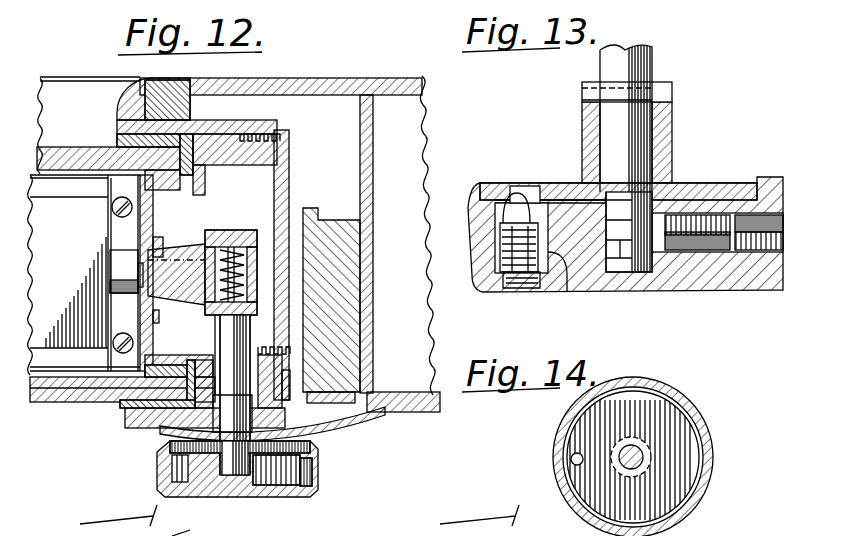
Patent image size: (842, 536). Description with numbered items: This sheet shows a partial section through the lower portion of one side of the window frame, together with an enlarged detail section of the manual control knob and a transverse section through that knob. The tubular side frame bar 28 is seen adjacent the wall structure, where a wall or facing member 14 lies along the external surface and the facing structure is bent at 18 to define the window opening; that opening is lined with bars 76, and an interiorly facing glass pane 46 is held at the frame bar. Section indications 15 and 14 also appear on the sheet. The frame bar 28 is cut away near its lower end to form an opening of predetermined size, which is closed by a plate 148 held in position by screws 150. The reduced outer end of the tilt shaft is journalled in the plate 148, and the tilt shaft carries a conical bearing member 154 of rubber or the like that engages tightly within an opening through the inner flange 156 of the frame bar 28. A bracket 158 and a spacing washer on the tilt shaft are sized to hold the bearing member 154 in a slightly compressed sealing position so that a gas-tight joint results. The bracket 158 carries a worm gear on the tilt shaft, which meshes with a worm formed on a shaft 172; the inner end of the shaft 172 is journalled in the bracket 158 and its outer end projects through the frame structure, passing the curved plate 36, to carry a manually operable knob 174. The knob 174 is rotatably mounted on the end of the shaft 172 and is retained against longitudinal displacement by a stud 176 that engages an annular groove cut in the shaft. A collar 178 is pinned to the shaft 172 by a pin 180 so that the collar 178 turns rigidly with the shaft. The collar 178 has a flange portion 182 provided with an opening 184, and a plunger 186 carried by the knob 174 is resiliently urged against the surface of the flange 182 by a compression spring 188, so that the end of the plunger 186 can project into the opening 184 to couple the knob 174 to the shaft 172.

In FIG. 12, the wall or facing member 14 is at (392, 77).
In FIG. 12, the section line / cutting plane 15 is at (57, 253).
In FIG. 12, the bent portion of facing structure 18 is at (373, 140).
In FIG. 12, the side frame bar 28 is at (118, 195).
In FIG. 12, the curved cover plate 36 is at (372, 430).
In FIG. 12, the interiorly facing glass pane 46 is at (64, 400).
In FIG. 12, the bar 76 is at (375, 234).
In FIG. 12, the plate 148 is at (287, 182).
In FIG. 12, the screw 150 is at (287, 141).
In FIG. 12, the conical bearing member 154 is at (173, 306).
In FIG. 12, the inner flange 156 is at (163, 220).
In FIG. 12, the bracket 158 is at (223, 230).
In FIG. 12, the shaft 172 is at (240, 330).
In FIG. 13, the shaft 172 is at (650, 58).
In FIG. 14, the shaft 172 is at (640, 463).
In FIG. 12, the manually operable knob 174 is at (278, 500).
In FIG. 13, the manually operable knob 174 is at (678, 288).
In FIG. 14, the manually operable knob 174 is at (680, 515).
In FIG. 13, the stud 176 is at (716, 240).
In FIG. 13, the collar 178 is at (674, 128).
In FIG. 14, the collar 178 is at (612, 468).
In FIG. 13, the pin 180 is at (582, 95).
In FIG. 13, the flange portion 182 is at (716, 181).
In FIG. 14, the flange portion 182 is at (662, 430).
In FIG. 13, the opening 184 is at (522, 186).
In FIG. 14, the opening 184 is at (570, 459).
In FIG. 12, the plunger 186 is at (190, 462).
In FIG. 13, the plunger 186 is at (542, 186).
In FIG. 13, the compression spring 188 is at (564, 280).